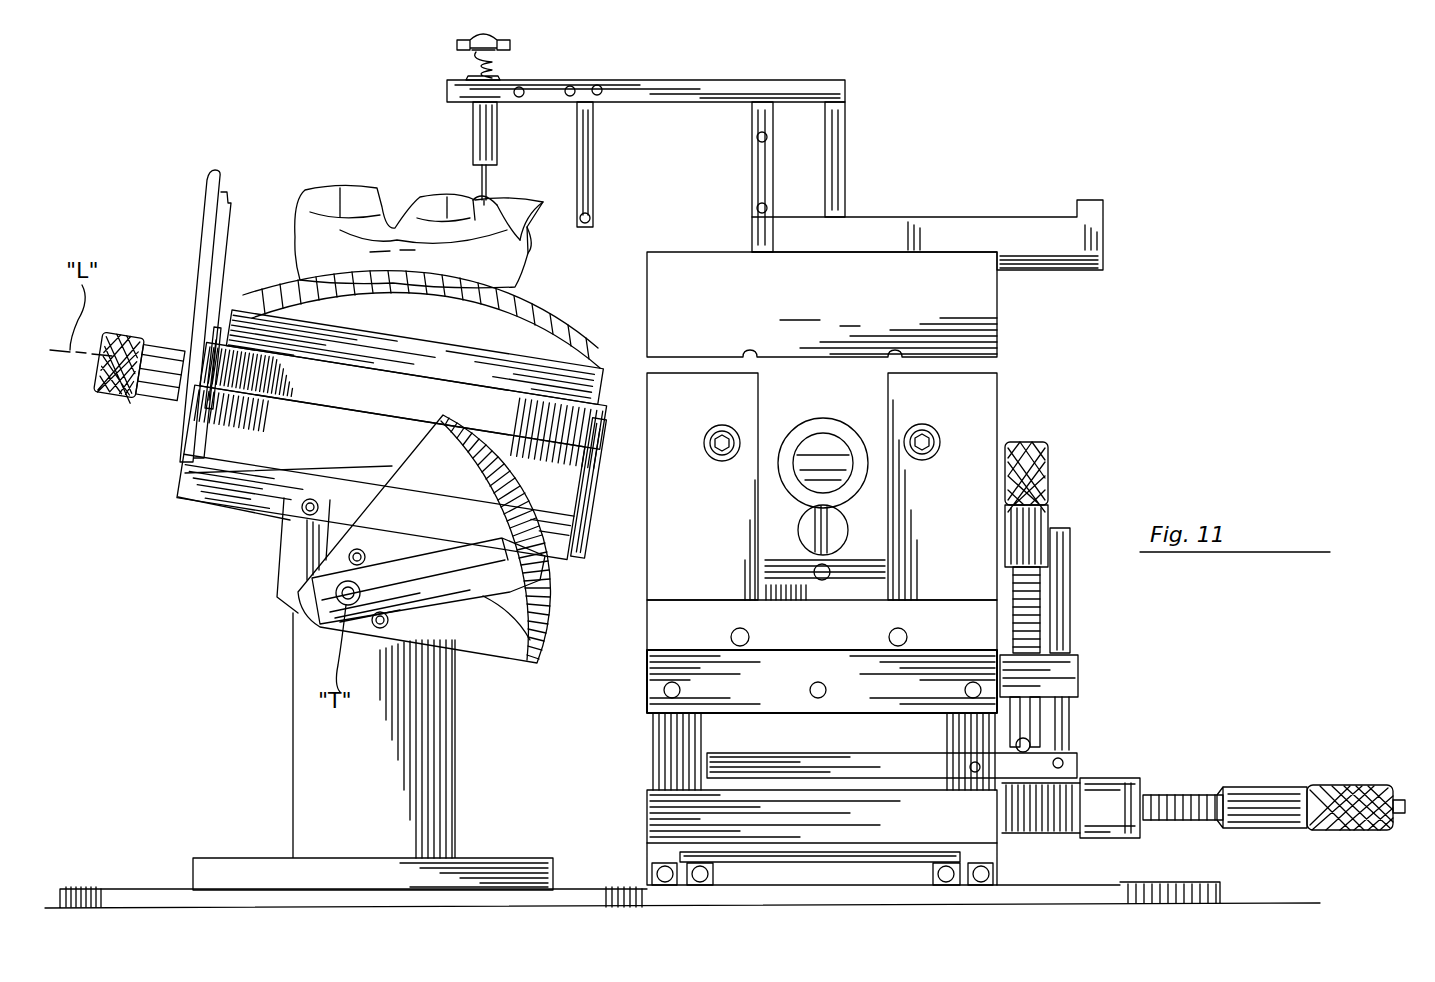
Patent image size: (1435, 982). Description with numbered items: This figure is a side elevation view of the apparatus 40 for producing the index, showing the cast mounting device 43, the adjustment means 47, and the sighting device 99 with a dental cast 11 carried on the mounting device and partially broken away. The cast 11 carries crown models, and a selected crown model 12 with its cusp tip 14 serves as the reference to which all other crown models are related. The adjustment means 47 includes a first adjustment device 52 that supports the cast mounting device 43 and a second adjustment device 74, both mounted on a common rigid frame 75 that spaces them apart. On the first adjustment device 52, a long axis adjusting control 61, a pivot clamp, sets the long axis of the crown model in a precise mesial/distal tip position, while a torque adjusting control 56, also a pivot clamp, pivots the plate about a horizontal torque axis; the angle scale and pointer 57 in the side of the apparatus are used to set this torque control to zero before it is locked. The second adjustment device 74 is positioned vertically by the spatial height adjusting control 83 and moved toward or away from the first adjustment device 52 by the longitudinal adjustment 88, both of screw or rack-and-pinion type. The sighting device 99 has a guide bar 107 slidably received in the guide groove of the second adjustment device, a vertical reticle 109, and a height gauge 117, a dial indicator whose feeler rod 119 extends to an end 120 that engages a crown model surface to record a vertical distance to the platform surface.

The indexed dental cast 11 is at (540, 260).
The crown model 12 is at (522, 230).
The cusp tip 14 is at (483, 202).
The apparatus 40 is at (1050, 357).
The cast mounting device 43 is at (535, 298).
The adjustment means 47 is at (645, 715).
The first adjustment device 52 is at (262, 548).
The torque adjusting control 56 is at (336, 612).
The angle scale and pointer 57 is at (543, 633).
The long axis adjusting control 61 is at (130, 334).
The second adjustment device 74 is at (1002, 318).
The rigid frame 75 is at (590, 888).
The spatial height adjusting control 83 is at (1050, 460).
The longitudinal adjustment 88 is at (1270, 790).
The sighting device 99 is at (862, 120).
The guide bar 107 is at (1090, 277).
The vertical reticle 109 is at (597, 172).
The height gauge 117 is at (513, 45).
The feeler rod 119 is at (473, 120).
The end of feeler rod 120 is at (480, 197).